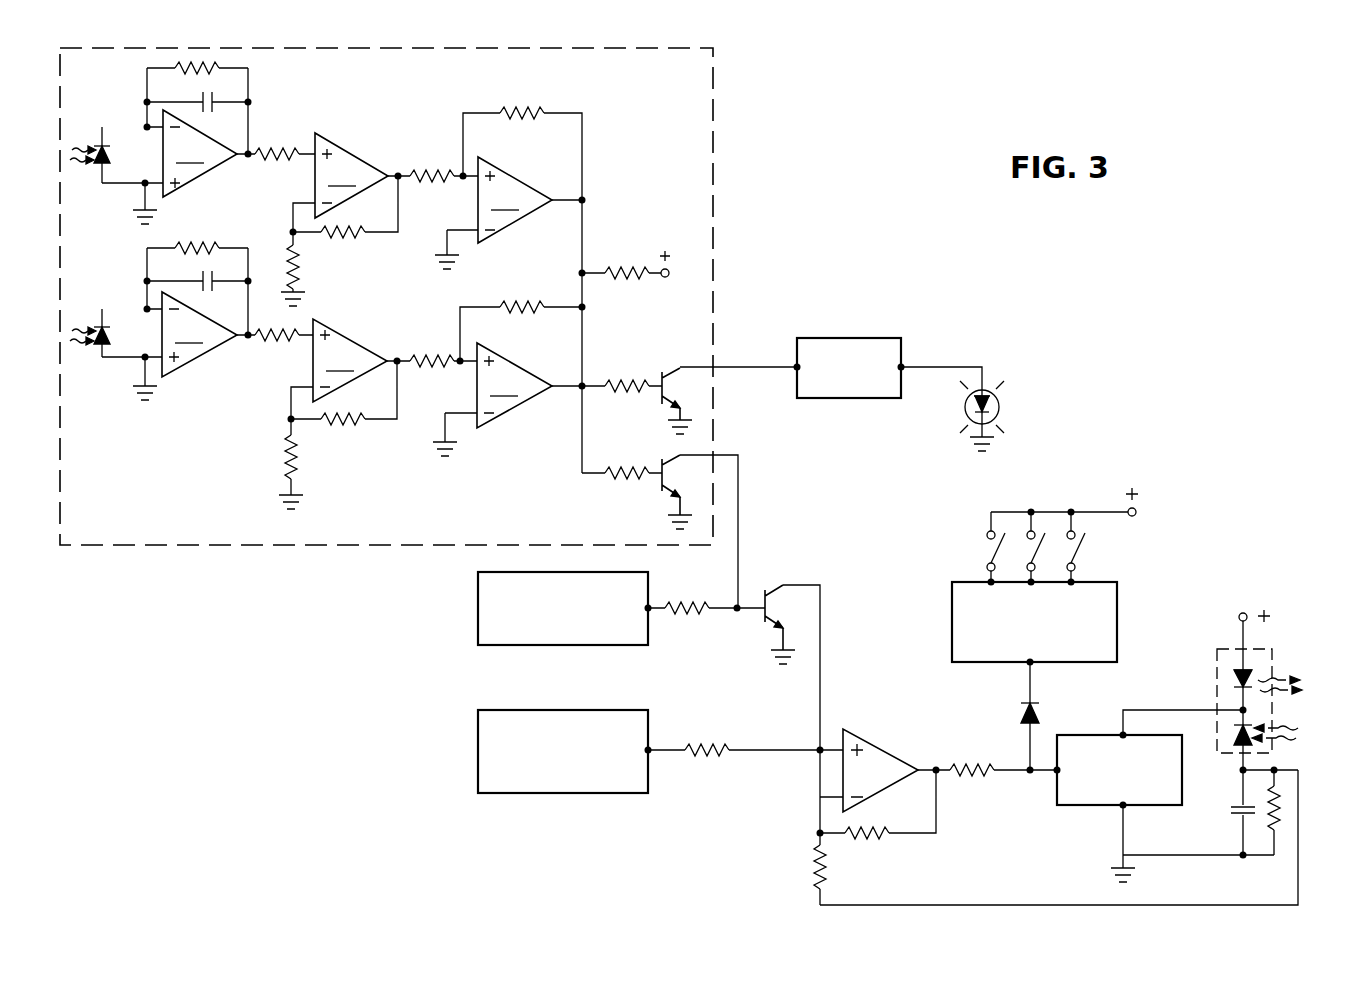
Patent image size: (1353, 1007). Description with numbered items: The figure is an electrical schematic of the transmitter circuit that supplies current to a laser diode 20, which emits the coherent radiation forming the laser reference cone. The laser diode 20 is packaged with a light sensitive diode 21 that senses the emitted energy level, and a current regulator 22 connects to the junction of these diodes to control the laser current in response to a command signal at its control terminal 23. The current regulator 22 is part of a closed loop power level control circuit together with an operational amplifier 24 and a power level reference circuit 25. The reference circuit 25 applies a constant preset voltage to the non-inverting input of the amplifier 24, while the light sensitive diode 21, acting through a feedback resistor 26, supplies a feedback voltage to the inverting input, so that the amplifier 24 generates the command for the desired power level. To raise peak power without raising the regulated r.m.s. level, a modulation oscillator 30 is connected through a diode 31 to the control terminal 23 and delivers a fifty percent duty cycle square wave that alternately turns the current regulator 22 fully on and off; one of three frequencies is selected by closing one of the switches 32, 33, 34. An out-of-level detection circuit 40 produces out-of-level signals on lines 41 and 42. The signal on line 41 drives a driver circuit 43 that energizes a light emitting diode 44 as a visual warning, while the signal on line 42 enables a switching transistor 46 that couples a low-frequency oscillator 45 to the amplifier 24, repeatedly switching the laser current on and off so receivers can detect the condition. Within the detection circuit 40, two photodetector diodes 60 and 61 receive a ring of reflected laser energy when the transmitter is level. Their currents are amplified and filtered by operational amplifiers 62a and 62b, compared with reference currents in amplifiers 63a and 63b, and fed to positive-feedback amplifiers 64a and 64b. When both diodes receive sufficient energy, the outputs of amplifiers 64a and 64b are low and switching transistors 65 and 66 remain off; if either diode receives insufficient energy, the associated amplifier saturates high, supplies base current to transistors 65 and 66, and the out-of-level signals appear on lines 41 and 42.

The laser diode 20 is at (1234, 682).
The light sensitive diode 21 is at (1234, 738).
The current regulator 22 is at (1170, 806).
The control terminal 23 is at (1054, 776).
The operational amplifier 24 is at (874, 746).
The power level reference circuit 25 is at (478, 765).
The feedback resistor 26 is at (814, 872).
The modulation oscillator 30 is at (952, 637).
The diode 31 is at (1042, 712).
The switch 32 is at (987, 534).
The switch 33 is at (1038, 537).
The switch 34 is at (1086, 543).
The out-of-level detection circuit 40 is at (718, 194).
The line 41 is at (752, 367).
The line 42 is at (738, 514).
The driver circuit 43 is at (838, 338).
The light emitting diode 44 is at (1000, 407).
The 2.68 Hertz oscillator 45 is at (478, 631).
The switching transistor 46 is at (783, 584).
The photodetector diode 60 is at (100, 150).
The photodetector diode 61 is at (102, 326).
The operational amplifier 62a is at (200, 153).
The operational amplifier 62b is at (199, 334).
The operational amplifier 63a is at (351, 175).
The operational amplifier 63b is at (350, 360).
The operational amplifier 64a is at (515, 200).
The operational amplifier 64b is at (514, 385).
The switching transistor 65 is at (670, 372).
The switching transistor 66 is at (664, 458).